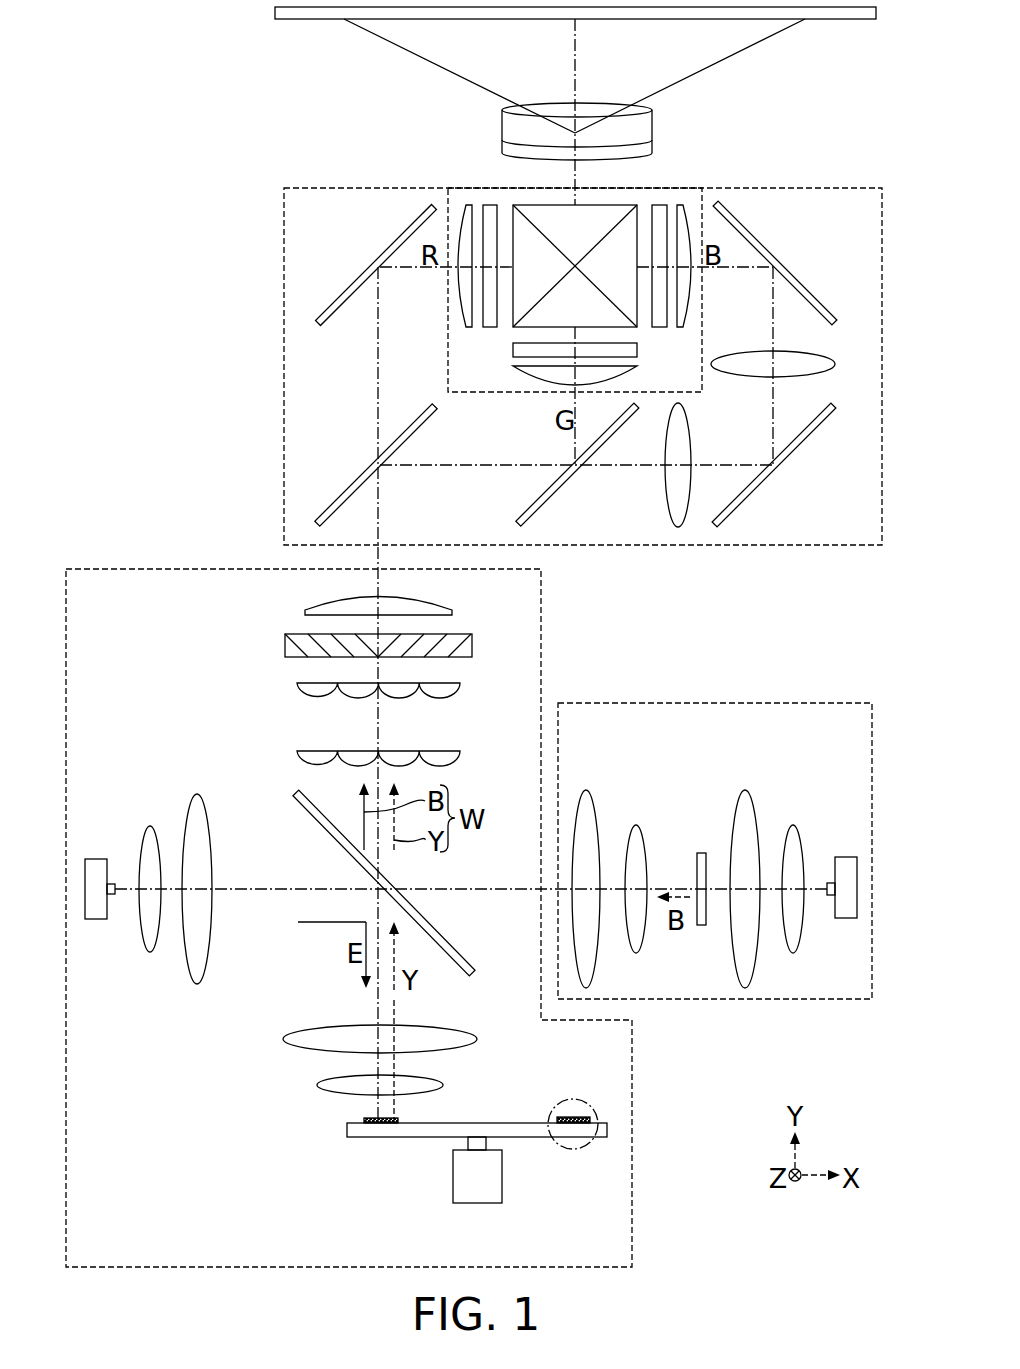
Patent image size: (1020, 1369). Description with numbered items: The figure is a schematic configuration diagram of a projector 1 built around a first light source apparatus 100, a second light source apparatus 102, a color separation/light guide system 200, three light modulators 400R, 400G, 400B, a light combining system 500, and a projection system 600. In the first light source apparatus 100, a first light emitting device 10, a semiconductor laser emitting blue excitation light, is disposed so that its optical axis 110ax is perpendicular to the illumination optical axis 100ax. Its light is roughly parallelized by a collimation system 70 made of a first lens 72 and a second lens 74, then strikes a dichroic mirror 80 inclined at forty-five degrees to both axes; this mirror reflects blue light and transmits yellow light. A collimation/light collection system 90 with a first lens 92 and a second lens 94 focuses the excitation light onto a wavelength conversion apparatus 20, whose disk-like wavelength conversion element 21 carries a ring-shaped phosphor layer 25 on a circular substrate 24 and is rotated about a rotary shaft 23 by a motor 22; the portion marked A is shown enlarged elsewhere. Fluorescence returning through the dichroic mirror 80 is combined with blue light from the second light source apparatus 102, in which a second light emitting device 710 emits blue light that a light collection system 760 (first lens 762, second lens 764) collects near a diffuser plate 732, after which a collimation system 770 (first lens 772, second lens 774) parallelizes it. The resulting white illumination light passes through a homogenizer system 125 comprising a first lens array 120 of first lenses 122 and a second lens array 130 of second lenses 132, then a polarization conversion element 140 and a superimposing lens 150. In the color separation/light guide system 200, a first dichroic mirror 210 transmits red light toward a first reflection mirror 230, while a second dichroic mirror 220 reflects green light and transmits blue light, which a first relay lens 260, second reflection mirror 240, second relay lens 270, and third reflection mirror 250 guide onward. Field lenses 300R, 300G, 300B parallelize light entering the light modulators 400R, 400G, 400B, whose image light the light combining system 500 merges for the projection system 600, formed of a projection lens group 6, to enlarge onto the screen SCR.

The projector 1 is at (236, 106).
The projection lens group 6 is at (560, 110).
The projection system 600 is at (500, 135).
The screen SCR is at (845, 20).
The light combining system 500 is at (634, 206).
The light modulator 400R is at (491, 205).
The light modulator 400G is at (513, 350).
The light modulator 400B is at (665, 205).
The field lens 300R is at (468, 205).
The field lens 300G is at (520, 372).
The field lens 300B is at (688, 205).
The color separation/light guide system 200 is at (824, 547).
The first dichroic mirror 210 is at (344, 493).
The second dichroic mirror 220 is at (558, 498).
The first reflection mirror 230 is at (318, 320).
The second reflection mirror 240 is at (797, 450).
The third reflection mirror 250 is at (834, 320).
The first relay lens 260 is at (666, 480).
The second relay lens 270 is at (806, 352).
The first light source apparatus 100 is at (633, 1185).
The illumination optical axis 100ax is at (378, 555).
The optical axis of the first light emitting device 110ax is at (243, 890).
The superimposing lens 150 is at (452, 602).
The polarization conversion element 140 is at (456, 634).
The second lens array 130 is at (408, 674).
The second lens 132 is at (300, 692).
The first lens array 120 is at (408, 726).
The first lens 122 is at (300, 762).
The homogenizer system 125 is at (600, 635).
The first light emitting device 10 is at (118, 848).
The collimation system 70 is at (173, 836).
The first lens 72 is at (150, 828).
The second lens 74 is at (193, 858).
The dichroic mirror 80 is at (456, 953).
The collimation/light collection system 90 is at (327, 1070).
The first lens 92 is at (325, 1093).
The second lens 94 is at (292, 1050).
The wavelength conversion apparatus 20 is at (516, 1131).
The wavelength conversion element 21 is at (526, 1100).
The motor 22 is at (502, 1188).
The rotary shaft 23 is at (480, 1145).
The substrate 24 is at (490, 1128).
The phosphor layer 25 is at (584, 1118).
The portion labeled A is at (588, 1103).
The second light source apparatus 102 is at (825, 1000).
The second light emitting device 710 is at (822, 855).
The diffuser plate 732 is at (702, 853).
The light collection system 760 is at (786, 850).
The first lens 762 is at (812, 855).
The second lens 764 is at (749, 805).
The collimation system 770 is at (626, 850).
The first lens 772 is at (653, 855).
The second lens 774 is at (590, 805).